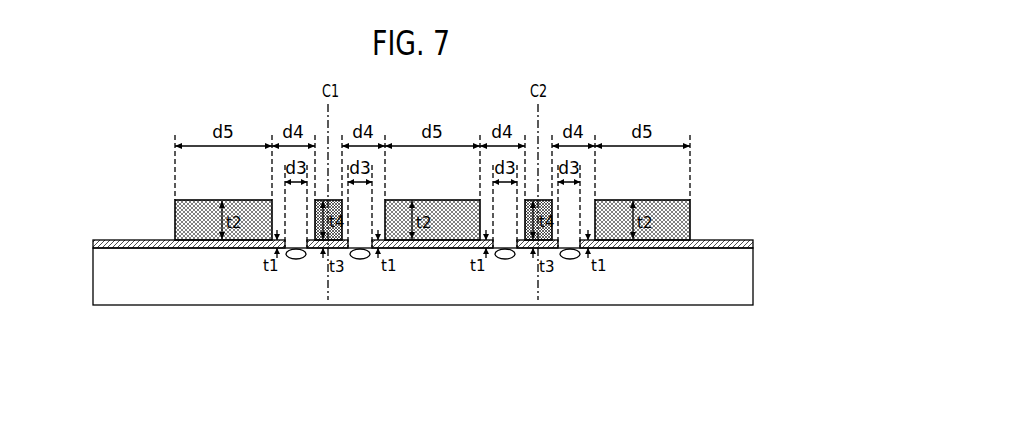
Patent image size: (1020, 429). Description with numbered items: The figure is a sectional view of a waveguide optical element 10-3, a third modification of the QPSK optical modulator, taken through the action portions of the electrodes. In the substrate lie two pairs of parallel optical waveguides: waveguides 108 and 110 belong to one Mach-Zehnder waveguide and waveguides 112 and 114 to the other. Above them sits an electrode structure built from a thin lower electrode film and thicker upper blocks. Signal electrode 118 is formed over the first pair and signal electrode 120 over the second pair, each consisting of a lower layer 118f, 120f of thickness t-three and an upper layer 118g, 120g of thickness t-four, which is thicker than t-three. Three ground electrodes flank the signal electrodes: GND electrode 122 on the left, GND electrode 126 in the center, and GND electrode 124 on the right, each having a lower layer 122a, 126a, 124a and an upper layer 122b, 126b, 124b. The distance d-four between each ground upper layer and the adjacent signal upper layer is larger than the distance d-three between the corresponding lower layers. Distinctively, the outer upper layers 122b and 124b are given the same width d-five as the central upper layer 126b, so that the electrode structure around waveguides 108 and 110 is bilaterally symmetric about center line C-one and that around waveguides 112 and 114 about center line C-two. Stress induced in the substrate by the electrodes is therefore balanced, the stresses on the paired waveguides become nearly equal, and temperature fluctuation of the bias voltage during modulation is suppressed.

The waveguide optical element 10-3 is at (115, 132).
The optical waveguide 108 is at (297, 259).
The optical waveguide 110 is at (361, 259).
The optical waveguide 112 is at (505, 260).
The optical waveguide 114 is at (577, 259).
The signal electrode 118 is at (284, 314).
The lower layer 118f is at (317, 241).
The upper layer 118g is at (323, 249).
The signal electrode 120 is at (567, 313).
The lower layer 120f is at (547, 241).
The upper layer 120g is at (536, 249).
The GND electrode 122 is at (161, 209).
The lower layer 122a is at (172, 240).
The upper layer 122b is at (185, 233).
The GND electrode 124 is at (713, 211).
The lower layer 124a is at (694, 240).
The upper layer 124b is at (691, 214).
The GND electrode 126 is at (432, 300).
The lower layer 126a is at (410, 246).
The upper layer 126b is at (437, 220).